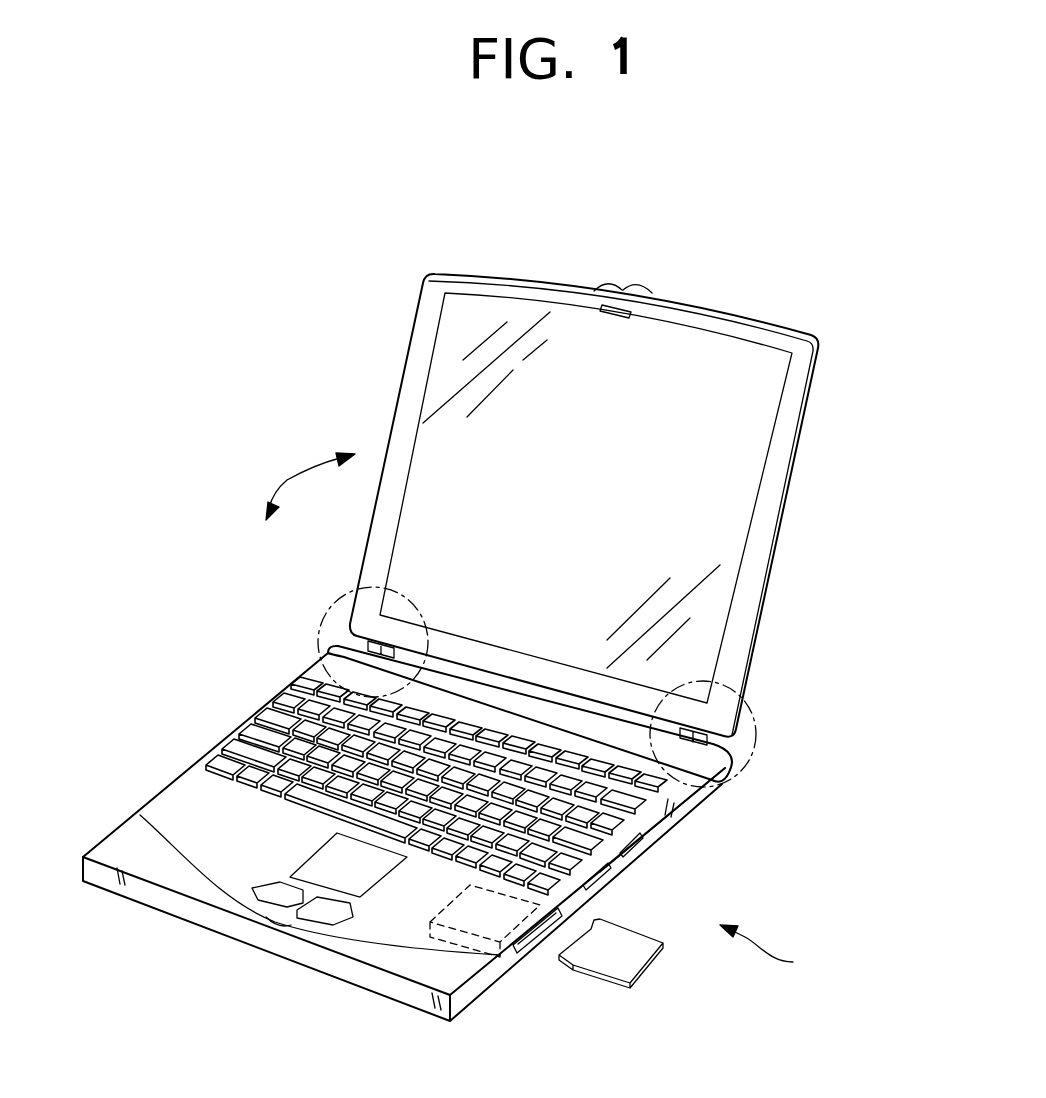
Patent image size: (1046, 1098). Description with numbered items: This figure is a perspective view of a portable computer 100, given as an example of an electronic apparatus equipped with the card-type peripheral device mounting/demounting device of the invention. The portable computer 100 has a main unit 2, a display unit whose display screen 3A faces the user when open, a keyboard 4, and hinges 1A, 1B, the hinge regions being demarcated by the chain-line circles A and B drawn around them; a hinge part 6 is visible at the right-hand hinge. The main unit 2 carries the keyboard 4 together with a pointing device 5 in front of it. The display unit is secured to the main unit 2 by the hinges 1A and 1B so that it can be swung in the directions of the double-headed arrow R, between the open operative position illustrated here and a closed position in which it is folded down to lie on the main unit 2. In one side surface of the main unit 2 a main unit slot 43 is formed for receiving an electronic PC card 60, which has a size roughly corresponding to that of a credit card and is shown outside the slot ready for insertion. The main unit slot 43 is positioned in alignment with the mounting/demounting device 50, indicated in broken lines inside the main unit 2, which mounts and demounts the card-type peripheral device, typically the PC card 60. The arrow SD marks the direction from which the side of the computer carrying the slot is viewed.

The portable computer 100 is at (684, 262).
The display screen 3A is at (720, 418).
The double-headed arrow R is at (287, 480).
The chain-line circle B is at (323, 617).
The hinge 1B is at (323, 650).
The chain-line circle A is at (760, 728).
The hinge 6 is at (727, 760).
The hinge 1A is at (690, 767).
The keyboard 4 is at (624, 850).
The pointing device 5 is at (290, 848).
The main unit 2 is at (380, 930).
The mounting/demounting device 50 is at (430, 937).
The main unit slot 43 is at (530, 937).
The PC card 60 is at (627, 950).
The arrow SD is at (782, 960).